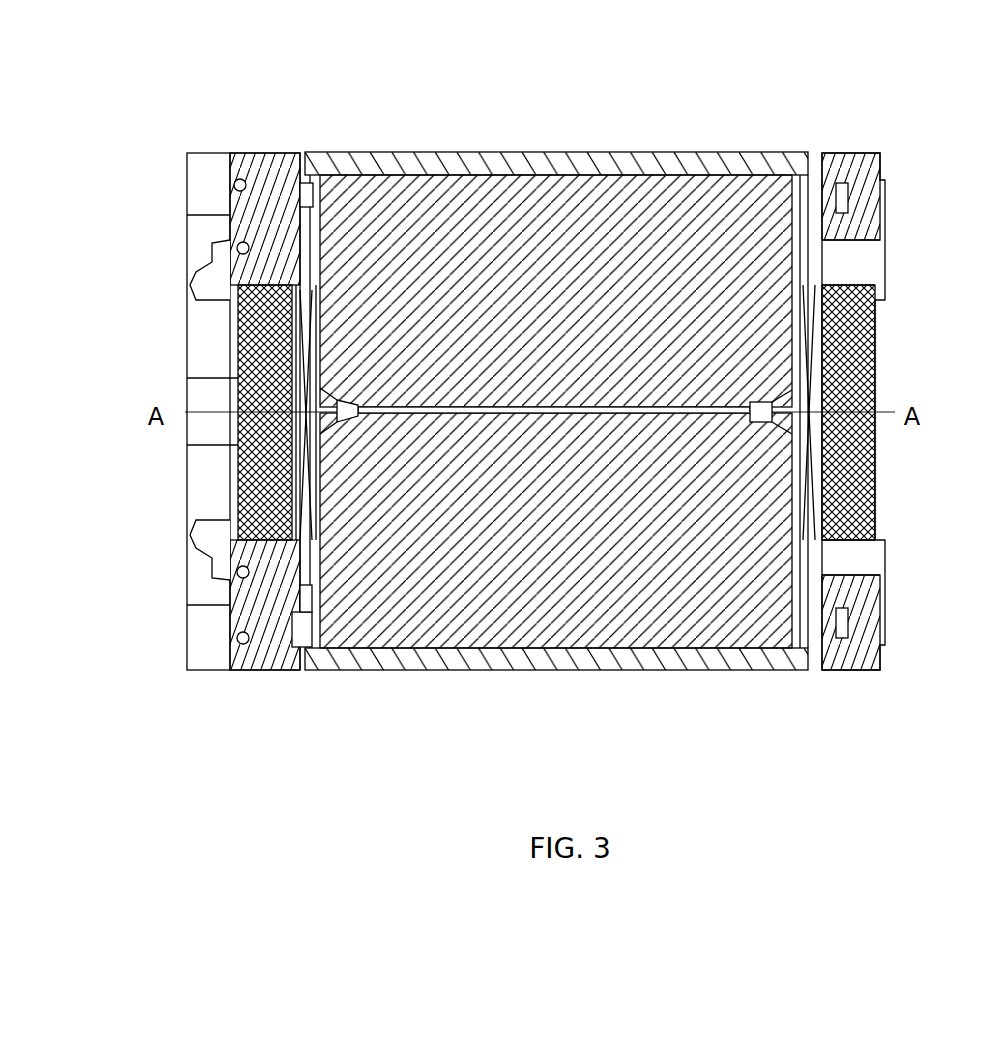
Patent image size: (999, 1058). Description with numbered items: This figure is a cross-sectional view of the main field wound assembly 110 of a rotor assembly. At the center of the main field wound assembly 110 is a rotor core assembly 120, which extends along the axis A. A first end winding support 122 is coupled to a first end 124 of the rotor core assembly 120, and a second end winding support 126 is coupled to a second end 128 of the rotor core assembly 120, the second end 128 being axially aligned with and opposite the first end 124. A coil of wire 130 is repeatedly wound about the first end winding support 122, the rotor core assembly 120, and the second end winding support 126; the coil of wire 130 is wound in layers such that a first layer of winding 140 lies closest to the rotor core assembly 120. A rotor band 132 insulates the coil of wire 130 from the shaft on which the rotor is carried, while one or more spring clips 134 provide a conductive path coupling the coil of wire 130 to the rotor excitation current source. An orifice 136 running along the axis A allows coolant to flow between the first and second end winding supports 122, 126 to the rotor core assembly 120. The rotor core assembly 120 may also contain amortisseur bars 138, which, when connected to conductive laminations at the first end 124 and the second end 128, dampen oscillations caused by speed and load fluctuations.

The main field wound assembly 110 is at (768, 96).
The rotor core assembly 120 is at (455, 625).
The first end winding support 122 is at (245, 668).
The first end 124 is at (312, 628).
The second end winding support 126 is at (860, 672).
The second end 128 is at (797, 590).
The coil of wire 130 is at (252, 398).
The rotor band 132 is at (195, 360).
The spring clips 134 is at (190, 545).
The orifice 136 is at (610, 413).
The amortisseur bars 138 is at (560, 151).
The first layer of winding 140 is at (287, 450).